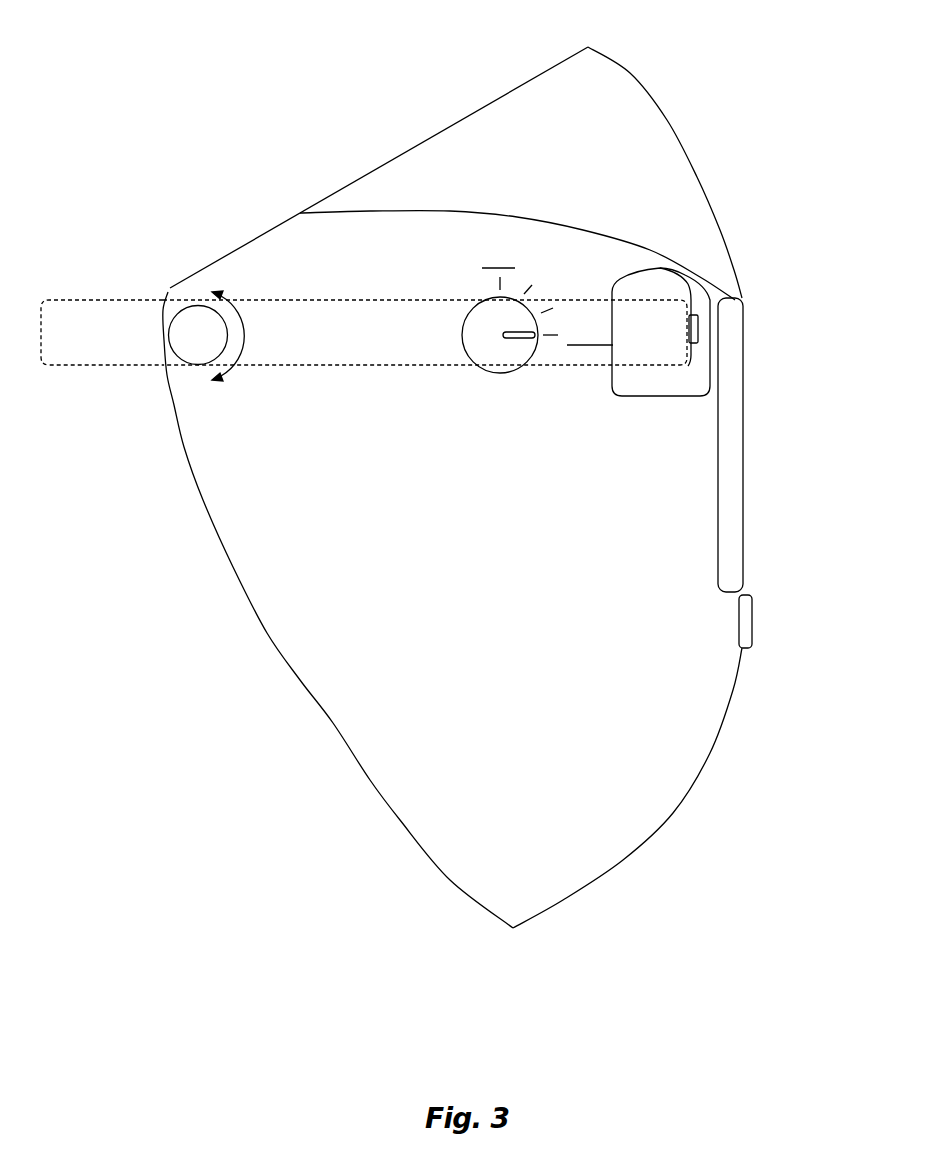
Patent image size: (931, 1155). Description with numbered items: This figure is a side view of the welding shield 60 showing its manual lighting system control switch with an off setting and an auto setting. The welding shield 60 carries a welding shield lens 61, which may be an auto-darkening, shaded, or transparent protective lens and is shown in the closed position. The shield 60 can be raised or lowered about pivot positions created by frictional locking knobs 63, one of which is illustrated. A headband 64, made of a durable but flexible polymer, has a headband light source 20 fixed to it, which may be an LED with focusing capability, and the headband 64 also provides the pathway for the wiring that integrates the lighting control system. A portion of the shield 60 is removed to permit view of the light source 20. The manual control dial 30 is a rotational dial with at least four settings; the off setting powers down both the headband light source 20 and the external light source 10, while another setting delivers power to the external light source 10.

The welding shield 60 is at (291, 137).
The welding shield lens 61 is at (732, 384).
The frictional locking knob 63 is at (199, 304).
The headband 64 is at (240, 362).
The manual control dial 30 is at (500, 373).
The headband light source 20 is at (657, 267).
The light source 10 is at (755, 619).